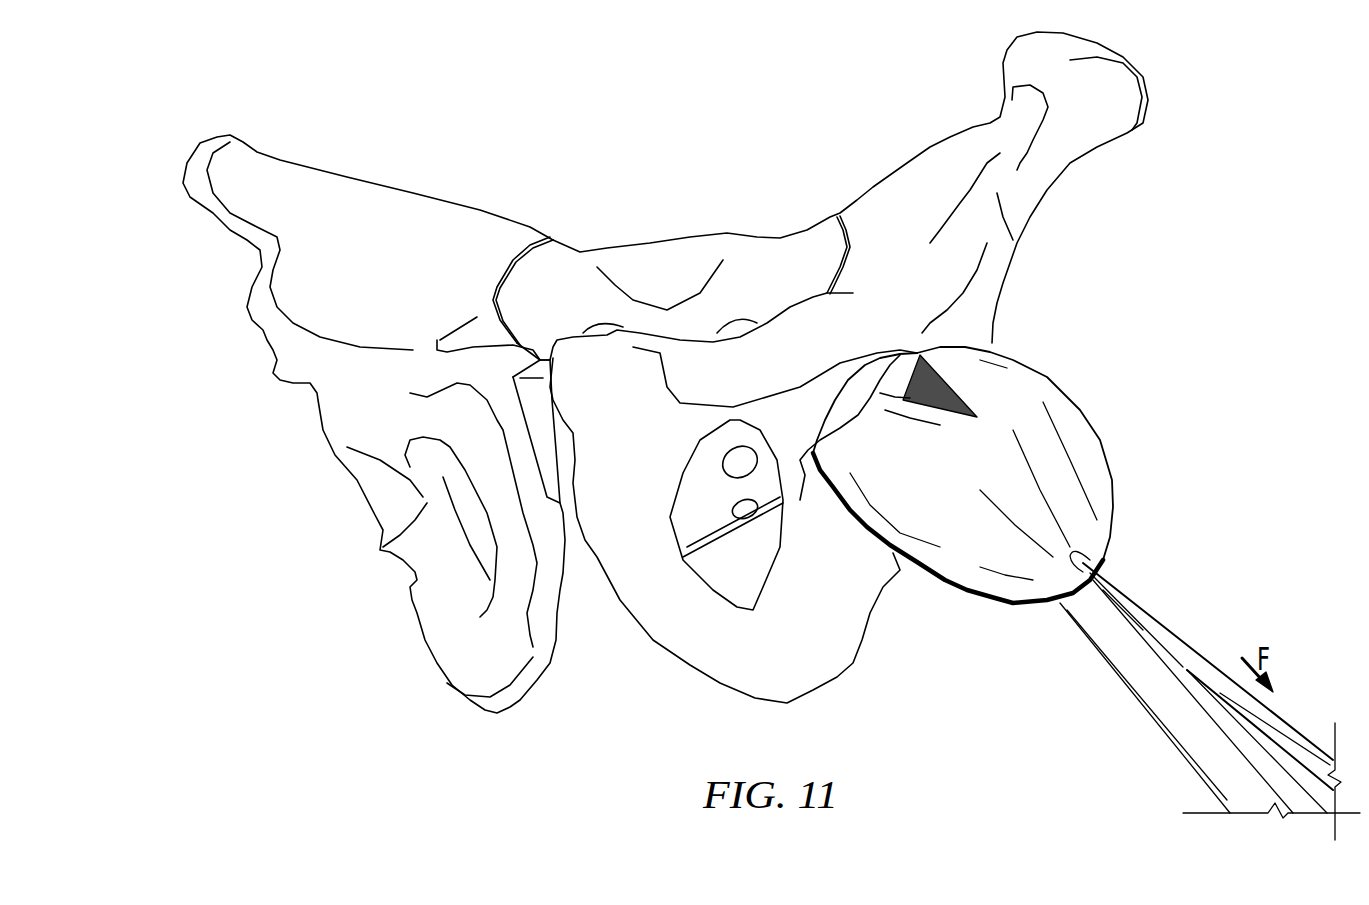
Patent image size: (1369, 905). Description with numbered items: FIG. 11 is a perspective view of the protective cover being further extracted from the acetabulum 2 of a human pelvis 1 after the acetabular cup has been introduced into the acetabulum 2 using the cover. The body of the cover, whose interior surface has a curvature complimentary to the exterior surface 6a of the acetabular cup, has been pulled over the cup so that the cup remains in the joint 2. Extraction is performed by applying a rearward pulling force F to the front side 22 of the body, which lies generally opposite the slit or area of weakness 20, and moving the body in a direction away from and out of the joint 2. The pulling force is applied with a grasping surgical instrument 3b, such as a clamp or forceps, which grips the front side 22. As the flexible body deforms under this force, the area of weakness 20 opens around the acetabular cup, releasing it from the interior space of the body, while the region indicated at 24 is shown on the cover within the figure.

The pelvis 1 is at (347, 243).
The acetabulum 2 is at (985, 350).
The exterior surface of acetabular cup 6a is at (907, 387).
The area of weakness 20 is at (900, 400).
The front side 22 is at (1075, 549).
The cup body 24 is at (967, 526).
The grasping surgical instrument 3b is at (1160, 620).